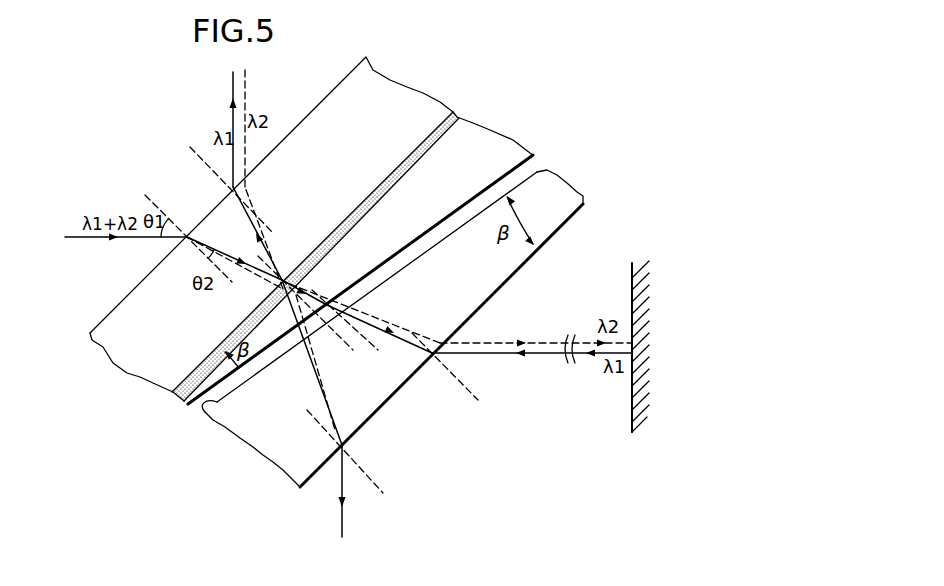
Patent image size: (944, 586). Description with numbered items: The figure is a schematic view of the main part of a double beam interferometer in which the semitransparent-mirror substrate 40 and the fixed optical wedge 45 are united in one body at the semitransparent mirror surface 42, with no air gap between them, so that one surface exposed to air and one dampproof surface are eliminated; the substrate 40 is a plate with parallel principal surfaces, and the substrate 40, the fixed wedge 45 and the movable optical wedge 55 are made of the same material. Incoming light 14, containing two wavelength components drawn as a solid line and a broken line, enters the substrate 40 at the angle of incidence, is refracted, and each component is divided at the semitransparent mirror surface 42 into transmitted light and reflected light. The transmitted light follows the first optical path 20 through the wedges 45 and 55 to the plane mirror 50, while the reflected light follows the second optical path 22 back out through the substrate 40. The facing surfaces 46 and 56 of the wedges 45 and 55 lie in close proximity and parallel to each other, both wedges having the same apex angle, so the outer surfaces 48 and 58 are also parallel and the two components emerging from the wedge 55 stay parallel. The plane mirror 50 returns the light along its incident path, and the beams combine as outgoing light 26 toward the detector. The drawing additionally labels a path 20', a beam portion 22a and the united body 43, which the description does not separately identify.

The incoming light 14 is at (75, 235).
The first optical path 20 is at (532, 379).
The forward beam 20' is at (536, 320).
The second optical path 22 is at (232, 122).
The reflected beam 22a is at (277, 263).
The outgoing light 26 is at (342, 528).
The semitransparent-mirror substrate 40 is at (142, 355).
The semitransparent mirror surface 42 is at (397, 160).
The beam splitter assembly 43 is at (541, 114).
The fixed optical wedge 45 is at (482, 137).
The facing surface of fixed optical wedge 46 is at (522, 165).
The surface of fixed optical wedge 48 is at (398, 178).
The plane mirror 50 is at (632, 414).
The movable optical wedge 55 is at (277, 457).
The facing surface of movable optical wedge 56 is at (203, 413).
The surface of movable optical wedge 58 is at (380, 410).